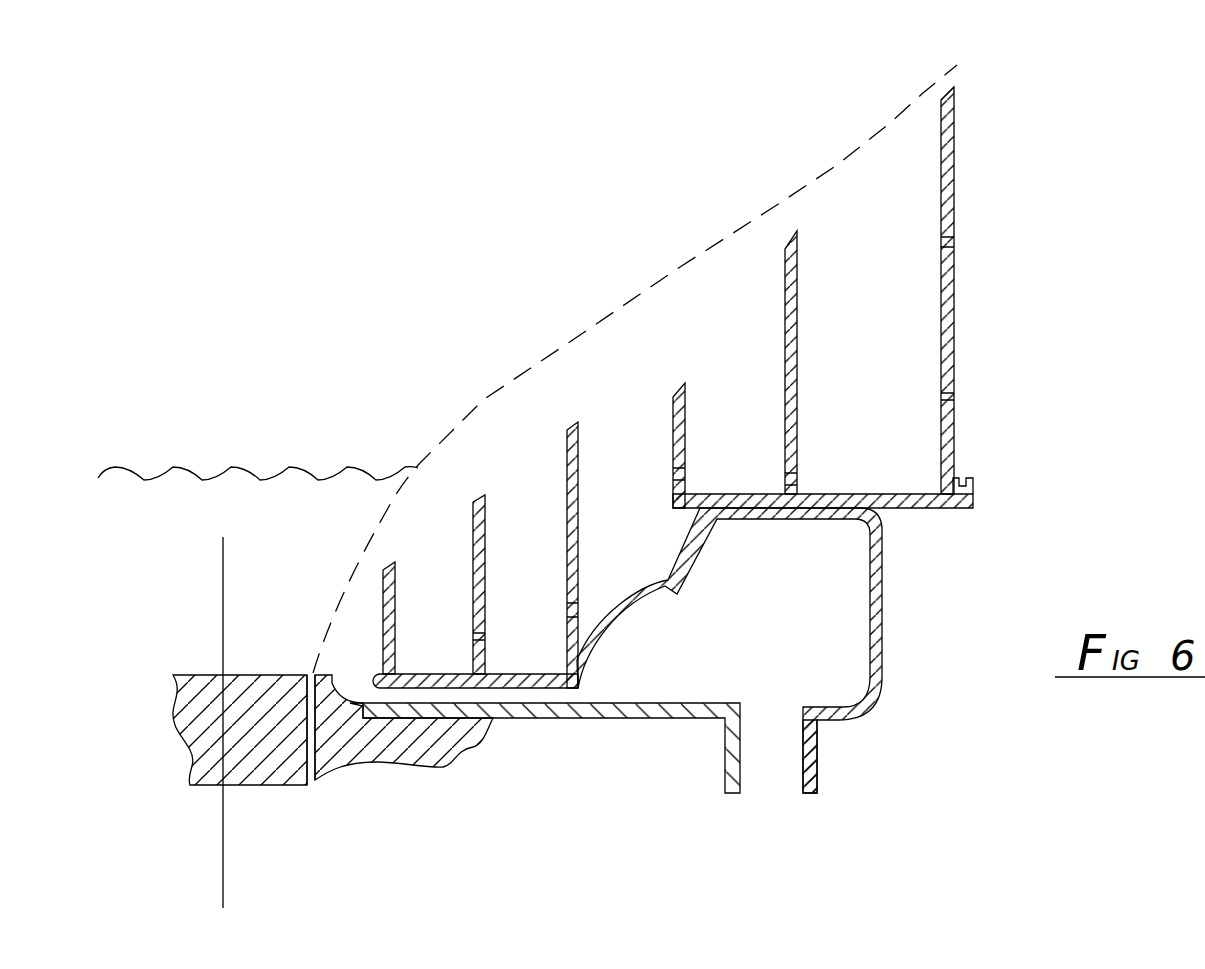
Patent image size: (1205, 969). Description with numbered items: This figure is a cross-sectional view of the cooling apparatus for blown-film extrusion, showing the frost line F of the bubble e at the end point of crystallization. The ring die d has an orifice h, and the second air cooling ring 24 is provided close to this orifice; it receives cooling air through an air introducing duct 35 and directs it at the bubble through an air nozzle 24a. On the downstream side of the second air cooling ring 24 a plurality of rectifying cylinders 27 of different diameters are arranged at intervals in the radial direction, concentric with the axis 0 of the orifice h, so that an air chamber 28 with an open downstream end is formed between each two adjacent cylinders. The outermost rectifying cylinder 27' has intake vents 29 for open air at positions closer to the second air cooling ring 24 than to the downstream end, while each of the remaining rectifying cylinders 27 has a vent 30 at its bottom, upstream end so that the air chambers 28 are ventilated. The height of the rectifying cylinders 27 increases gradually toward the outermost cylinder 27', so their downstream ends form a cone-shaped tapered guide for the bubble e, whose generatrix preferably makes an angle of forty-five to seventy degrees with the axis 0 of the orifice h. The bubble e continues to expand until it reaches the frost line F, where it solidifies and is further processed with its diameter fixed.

The second air cooling ring 24 is at (782, 625).
The air nozzle 24a is at (350, 673).
The rectifying cylinder 27 is at (668, 387).
The outermost rectifying cylinder 27' is at (1015, 86).
The air chamber 28 is at (444, 632).
The intake vent 29 is at (947, 243).
The vent 30 is at (485, 636).
The air introducing duct 35 is at (817, 766).
The frost line F is at (340, 457).
The bubble e is at (972, 76).
The orifice h is at (310, 673).
The ring die d is at (198, 673).
The axis of the orifice 0 is at (221, 737).